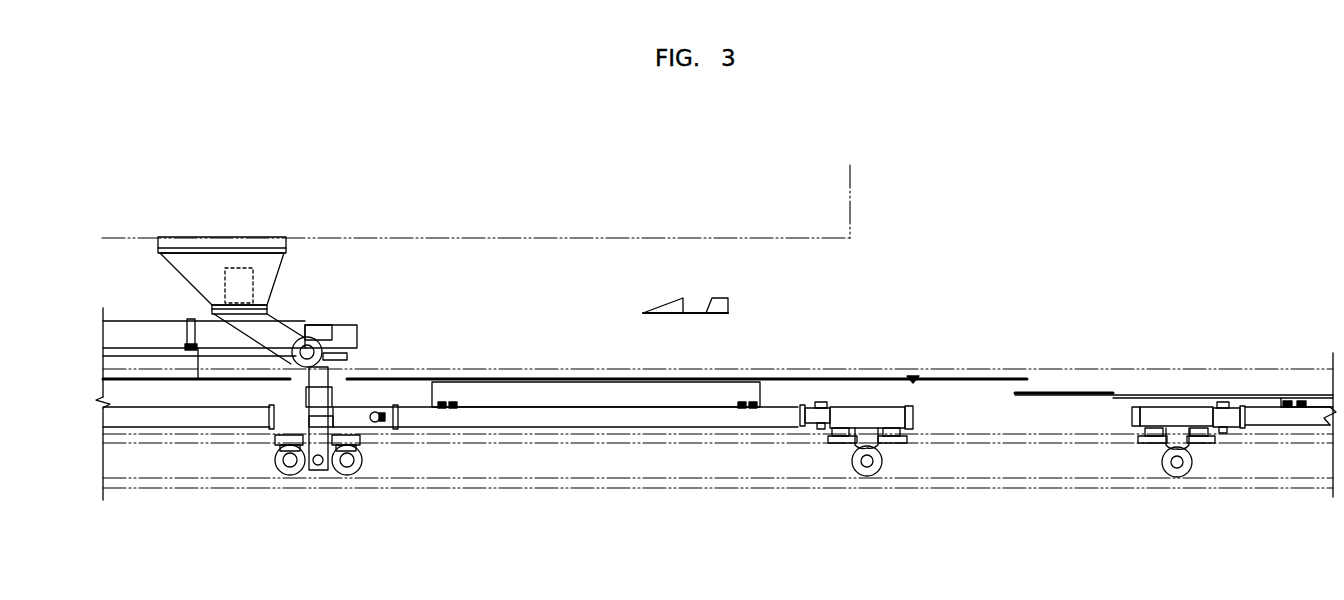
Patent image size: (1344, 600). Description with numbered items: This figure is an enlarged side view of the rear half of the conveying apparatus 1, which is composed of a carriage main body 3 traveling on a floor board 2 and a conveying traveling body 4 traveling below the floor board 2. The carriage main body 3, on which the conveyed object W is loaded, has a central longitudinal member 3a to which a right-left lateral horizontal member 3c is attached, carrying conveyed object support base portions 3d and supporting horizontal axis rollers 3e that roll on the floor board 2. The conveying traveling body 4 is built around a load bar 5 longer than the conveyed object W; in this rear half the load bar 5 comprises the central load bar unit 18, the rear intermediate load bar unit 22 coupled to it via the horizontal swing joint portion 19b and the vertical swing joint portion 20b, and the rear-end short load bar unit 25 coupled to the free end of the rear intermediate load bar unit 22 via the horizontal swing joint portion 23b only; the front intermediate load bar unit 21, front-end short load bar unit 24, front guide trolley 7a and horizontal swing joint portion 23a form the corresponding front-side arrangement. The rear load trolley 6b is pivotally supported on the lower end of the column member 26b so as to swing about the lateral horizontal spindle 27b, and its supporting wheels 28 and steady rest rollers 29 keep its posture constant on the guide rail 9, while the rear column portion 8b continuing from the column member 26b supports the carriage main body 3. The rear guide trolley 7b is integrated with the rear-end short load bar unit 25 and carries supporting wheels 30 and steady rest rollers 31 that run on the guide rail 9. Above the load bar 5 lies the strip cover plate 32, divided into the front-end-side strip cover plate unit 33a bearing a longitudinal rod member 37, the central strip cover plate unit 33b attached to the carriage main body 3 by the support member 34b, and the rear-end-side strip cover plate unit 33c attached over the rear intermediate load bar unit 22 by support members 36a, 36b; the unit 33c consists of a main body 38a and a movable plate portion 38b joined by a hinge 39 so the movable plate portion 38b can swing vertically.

The conveying apparatus 1 is at (113, 300).
The floor board 2 is at (772, 376).
The carriage main body 3 is at (313, 278).
The central longitudinal member 3a is at (112, 338).
The right-left lateral horizontal member 3c is at (253, 283).
The conveyed object support base portion 3d is at (222, 242).
The supporting horizontal axis roller 3e is at (352, 338).
The conveying traveling body 4 is at (546, 394).
The load bar 5 is at (719, 437).
The rear load trolley 6b is at (301, 463).
The front guide trolley 7a is at (1215, 403).
The rear guide trolley 7b is at (854, 399).
The rear column portion 8b is at (325, 375).
The guide rail 9 is at (662, 462).
The central load bar unit 18 is at (135, 418).
The horizontal swing joint portion 19b is at (320, 412).
The vertical swing joint portion 20b is at (425, 412).
The front intermediate load bar unit 21 is at (1313, 410).
The rear intermediate load bar unit 22 is at (647, 415).
The horizontal swing joint portion 23a is at (1222, 440).
The horizontal swing joint portion 23b is at (820, 440).
The front-end short load bar unit 24 is at (1215, 403).
The rear-end short load bar unit 25 is at (854, 399).
The column member 26b is at (320, 438).
The right-left lateral horizontal spindle 27b is at (318, 466).
The supporting wheel 28 is at (286, 474).
The steady rest roller 29 is at (278, 438).
The supporting wheel 30 is at (872, 470).
The steady rest roller 31 is at (842, 446).
The strip cover plate 32 is at (510, 368).
The front-end-side strip cover plate unit 33a is at (1158, 392).
The central strip cover plate unit 33b is at (160, 380).
The rear-end-side strip cover plate unit 33c is at (601, 368).
The support member 34b is at (190, 362).
The support member 36a is at (447, 393).
The support member 36b is at (757, 390).
The longitudinal rod member 37 is at (1058, 392).
The main body 38a is at (815, 378).
The movable plate portion 38b is at (968, 378).
The hinge 39 is at (913, 376).
The conveyed object W is at (842, 203).